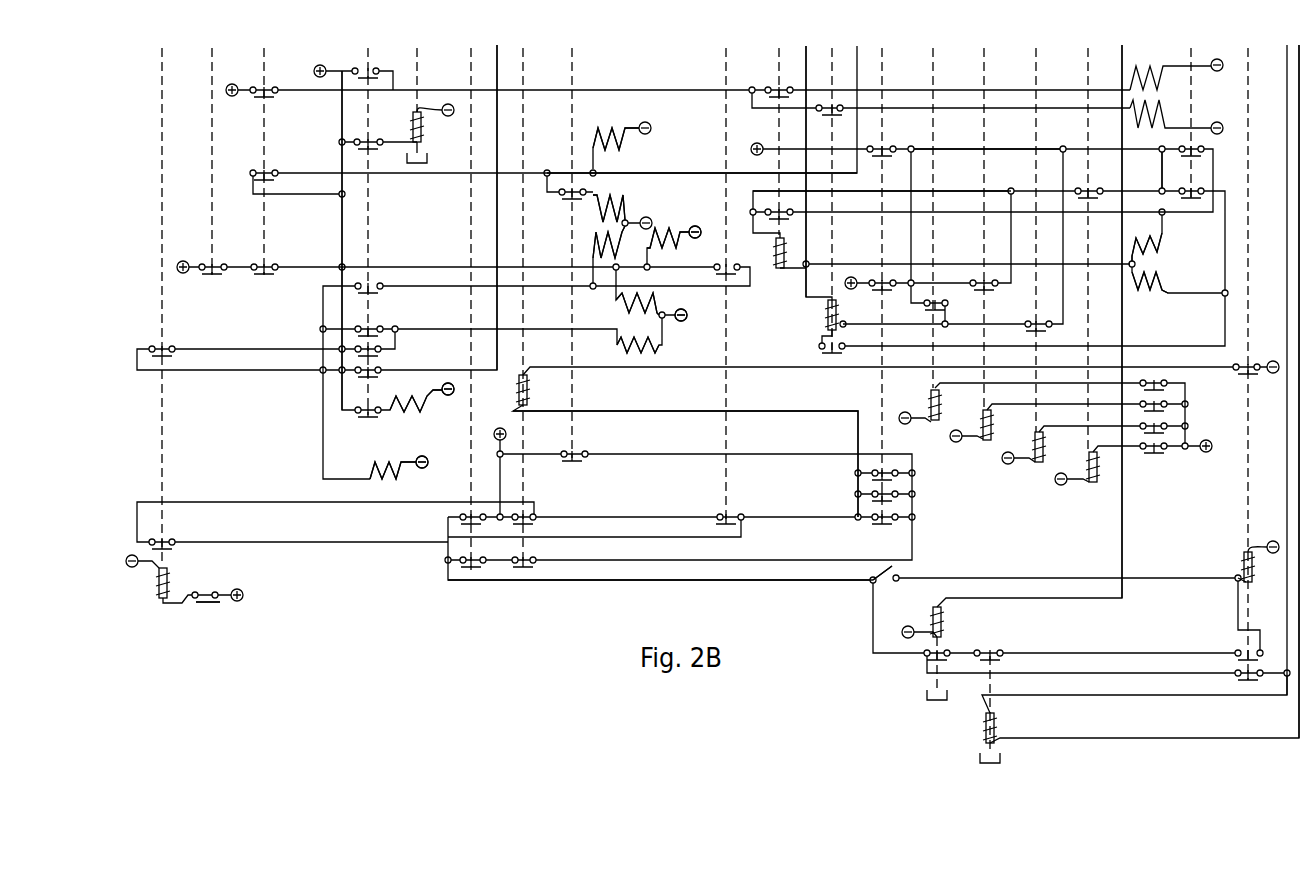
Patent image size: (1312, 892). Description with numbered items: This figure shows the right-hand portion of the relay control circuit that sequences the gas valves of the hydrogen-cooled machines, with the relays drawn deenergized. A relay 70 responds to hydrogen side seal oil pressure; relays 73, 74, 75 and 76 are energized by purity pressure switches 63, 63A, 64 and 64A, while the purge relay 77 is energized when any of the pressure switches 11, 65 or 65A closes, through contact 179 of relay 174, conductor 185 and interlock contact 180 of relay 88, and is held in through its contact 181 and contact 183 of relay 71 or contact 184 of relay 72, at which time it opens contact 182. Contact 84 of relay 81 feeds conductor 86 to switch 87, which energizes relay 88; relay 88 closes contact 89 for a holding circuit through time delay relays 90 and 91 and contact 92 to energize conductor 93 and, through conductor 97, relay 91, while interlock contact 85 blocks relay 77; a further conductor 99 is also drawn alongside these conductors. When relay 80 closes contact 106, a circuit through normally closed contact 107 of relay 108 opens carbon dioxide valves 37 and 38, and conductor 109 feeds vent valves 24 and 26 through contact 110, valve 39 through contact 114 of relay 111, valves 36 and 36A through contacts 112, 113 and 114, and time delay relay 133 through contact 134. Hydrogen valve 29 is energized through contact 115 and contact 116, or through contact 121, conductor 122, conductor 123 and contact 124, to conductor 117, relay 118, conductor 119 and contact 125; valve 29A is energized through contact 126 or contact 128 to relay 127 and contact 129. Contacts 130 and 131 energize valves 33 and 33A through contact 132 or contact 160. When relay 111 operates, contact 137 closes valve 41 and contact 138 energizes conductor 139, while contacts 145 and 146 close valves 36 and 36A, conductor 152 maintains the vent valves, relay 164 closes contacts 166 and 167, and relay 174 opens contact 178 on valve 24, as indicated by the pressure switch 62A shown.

The normally open contact 11 is at (866, 524).
The solenoid valve 24 is at (604, 197).
The solenoid valve 26 is at (613, 130).
The solenoid valve 29 is at (1163, 248).
The solenoid valve 29A is at (1165, 275).
The solenoid valve 33 is at (1140, 78).
The solenoid valve 33A is at (1138, 112).
The solenoid valve 36 is at (618, 240).
The solenoid valve 36A is at (380, 471).
The solenoid valve 37 is at (660, 241).
The solenoid valve 38 is at (617, 303).
The solenoid valve 39 is at (616, 342).
The solenoid valve 41 is at (421, 397).
The pressure switch 62A is at (218, 592).
The pressure switch 63 is at (1178, 402).
The pressure switch 63A is at (1160, 388).
The pressure switch 64 is at (1178, 453).
The pressure switch 64A is at (1180, 424).
The pressure switch 65 is at (912, 489).
The pressure switch 65A is at (912, 467).
The relay 70 is at (888, 60).
The relay 71 is at (724, 62).
The relay 72 is at (160, 76).
The relay 73 is at (938, 60).
The relay 74 is at (989, 60).
The relay 75 is at (1041, 60).
The relay 76 is at (1091, 60).
The purge relay 77 is at (533, 392).
The relay 80 is at (212, 76).
The relay 81 is at (477, 60).
The contact 84 is at (469, 525).
The interlock contact 85 is at (469, 568).
The conductor 86 is at (733, 585).
The switch 87 is at (871, 582).
The relay 88 is at (1252, 60).
The contact 89 is at (1238, 650).
The first time delay relay 90 is at (942, 620).
The second time delay relay 91 is at (985, 728).
The contact 92 is at (1238, 676).
The conductor 93 is at (1287, 104).
The conductor 97 is at (1299, 120).
The conductor 99 is at (1122, 141).
The contact 106 is at (218, 275).
The normally closed contact 107 is at (265, 270).
The relay 108 is at (264, 80).
The conductor 109 is at (340, 122).
The contact 110 is at (270, 176).
The relay 111 is at (378, 208).
The contact 112 is at (376, 328).
The contact 113 is at (383, 290).
The contact 114 is at (386, 353).
The contact 115 is at (884, 290).
The contact 116 is at (975, 287).
The conductor 117 is at (945, 192).
The relay 118 is at (777, 60).
The conductor 119 is at (806, 78).
The contact 121 is at (884, 153).
The conductor 122 is at (1028, 149).
The conductor 123 is at (1162, 182).
The contact 124 is at (1094, 186).
The contact 125 is at (778, 206).
The normally closed contact 126 is at (926, 310).
The relay 127 is at (830, 72).
The contact 128 is at (1026, 324).
The contact 129 is at (818, 352).
The contact 130 is at (775, 88).
The contact 131 is at (838, 116).
The normally closed contact 132 is at (368, 75).
The time delay relay 133 is at (417, 64).
The normally closed contact 134 is at (379, 133).
The contact 137 is at (380, 412).
The contact 138 is at (380, 374).
The conductor 139 is at (497, 212).
The contact 145 is at (718, 263).
The contact 146 is at (170, 352).
The conductor 152 is at (676, 174).
The contact 160 is at (267, 98).
The relay 164 is at (1196, 80).
The contact 166 is at (1181, 147).
The contact 167 is at (1184, 179).
The relay 174 is at (582, 62).
The contact 178 is at (556, 198).
The contact 179 is at (582, 461).
The interlock contact 180 is at (1255, 362).
The contact 181 is at (535, 522).
The contact 182 is at (535, 565).
The contact 183 is at (718, 522).
The contact 184 is at (170, 546).
The conductor 185 is at (815, 412).